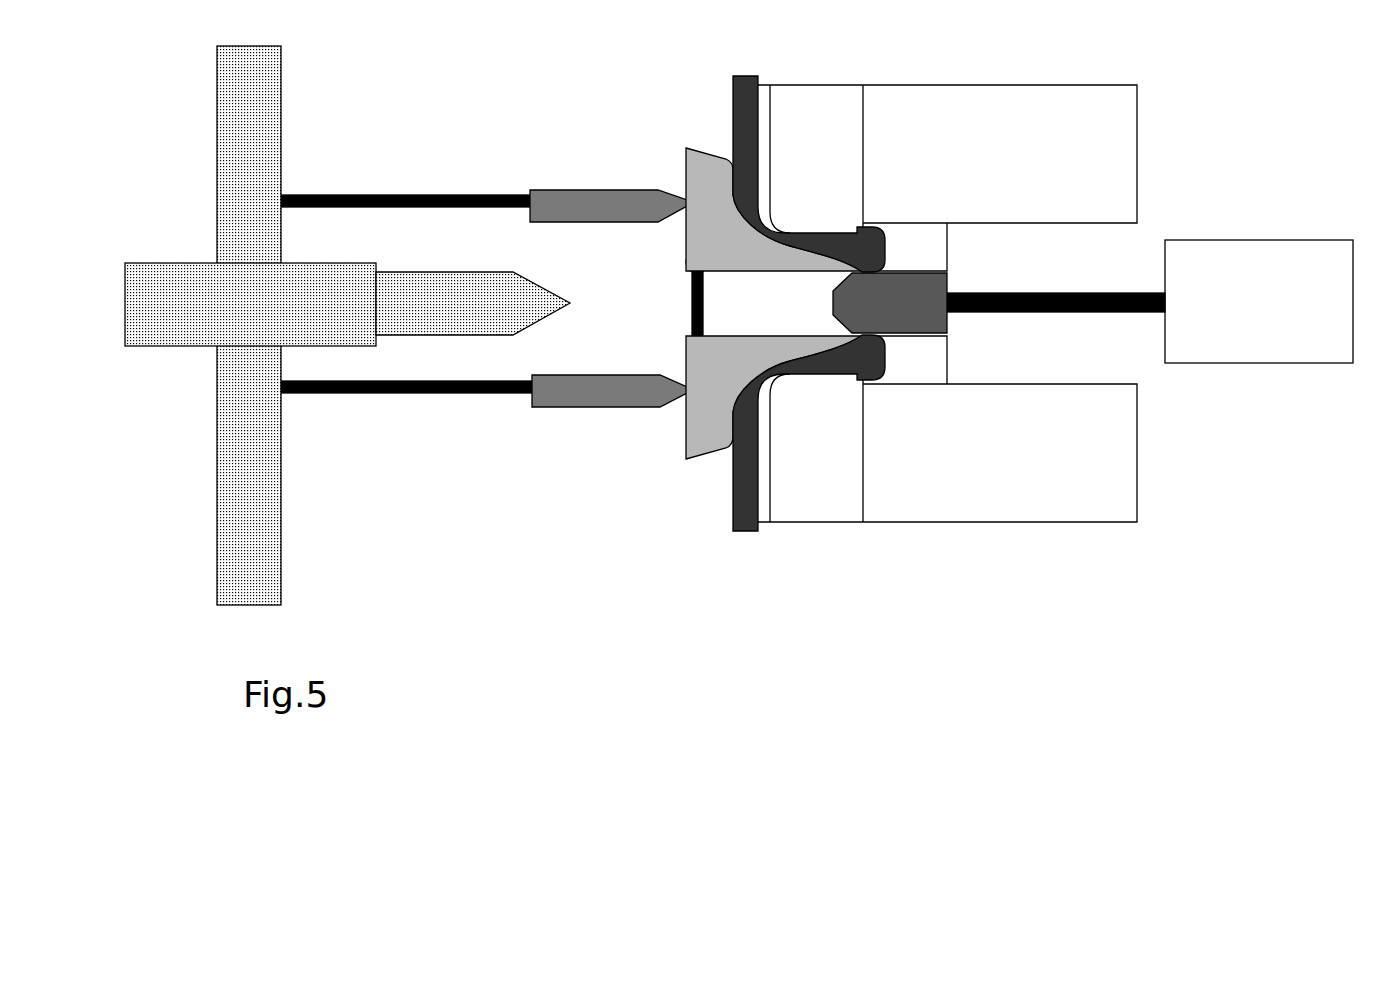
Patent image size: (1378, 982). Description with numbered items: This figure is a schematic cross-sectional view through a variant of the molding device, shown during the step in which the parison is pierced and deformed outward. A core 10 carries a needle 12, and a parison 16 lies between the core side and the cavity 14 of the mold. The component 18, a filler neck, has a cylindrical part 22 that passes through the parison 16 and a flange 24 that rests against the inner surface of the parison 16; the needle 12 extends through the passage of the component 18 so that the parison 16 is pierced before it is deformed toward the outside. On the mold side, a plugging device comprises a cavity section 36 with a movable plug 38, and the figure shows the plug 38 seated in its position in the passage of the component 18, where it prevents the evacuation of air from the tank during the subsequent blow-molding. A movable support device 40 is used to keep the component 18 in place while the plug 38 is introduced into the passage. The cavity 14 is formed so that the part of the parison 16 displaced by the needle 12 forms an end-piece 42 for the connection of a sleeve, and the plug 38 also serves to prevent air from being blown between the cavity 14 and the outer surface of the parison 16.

The core 10 is at (250, 138).
The needle 12 is at (454, 318).
The cavity 14 is at (1000, 477).
The parison 16 is at (735, 110).
The component 18 is at (725, 233).
The cylindrical part 22 is at (783, 348).
The flange 24 is at (707, 427).
The cavity section 36 is at (1267, 282).
The movable plug 38 is at (937, 283).
The movable support device 40 is at (580, 200).
The end-piece 42 is at (848, 222).